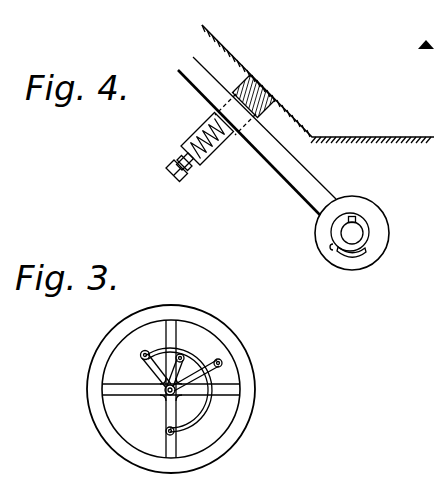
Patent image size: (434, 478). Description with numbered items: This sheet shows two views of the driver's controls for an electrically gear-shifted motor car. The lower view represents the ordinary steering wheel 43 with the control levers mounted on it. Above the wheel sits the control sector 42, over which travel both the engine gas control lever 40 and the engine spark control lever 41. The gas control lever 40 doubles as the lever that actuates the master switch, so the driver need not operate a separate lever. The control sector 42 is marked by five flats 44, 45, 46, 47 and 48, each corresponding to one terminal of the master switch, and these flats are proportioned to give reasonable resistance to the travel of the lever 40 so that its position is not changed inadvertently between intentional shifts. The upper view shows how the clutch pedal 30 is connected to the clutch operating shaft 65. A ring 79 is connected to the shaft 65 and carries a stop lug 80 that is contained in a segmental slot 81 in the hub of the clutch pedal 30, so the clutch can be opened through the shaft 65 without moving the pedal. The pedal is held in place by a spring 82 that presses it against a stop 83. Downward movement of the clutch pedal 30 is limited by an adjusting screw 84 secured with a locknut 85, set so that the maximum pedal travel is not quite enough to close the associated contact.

In FIG. 4, the clutch pedal 30 is at (202, 93).
In FIG. 4, the stop 83 is at (258, 97).
In FIG. 4, the spring 82 is at (216, 150).
In FIG. 4, the adjusting screw 84 is at (180, 180).
In FIG. 4, the locknut 85 is at (187, 171).
In FIG. 4, the clutch operating shaft 65 is at (356, 233).
In FIG. 4, the ring 79 is at (368, 242).
In FIG. 4, the stop lug 80 is at (333, 255).
In FIG. 4, the segmental slot 81 is at (355, 262).
In FIG. 3, the engine gas control lever 40 is at (223, 363).
In FIG. 3, the engine spark control lever 41 is at (196, 357).
In FIG. 3, the control sector 42 is at (207, 415).
In FIG. 3, the steering wheel 43 is at (216, 452).
In FIG. 3, the flat 44 is at (143, 351).
In FIG. 3, the flat 45 is at (160, 349).
In FIG. 3, the flat 46 is at (175, 350).
In FIG. 3, the flat 47 is at (182, 353).
In FIG. 3, the flat 48 is at (191, 352).